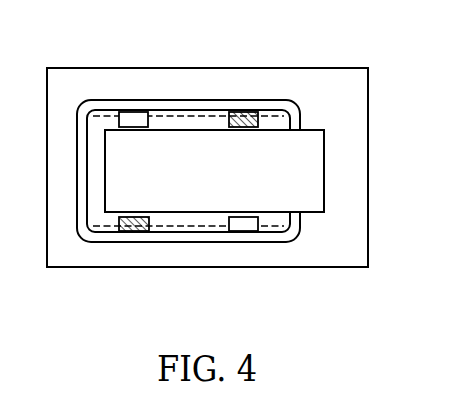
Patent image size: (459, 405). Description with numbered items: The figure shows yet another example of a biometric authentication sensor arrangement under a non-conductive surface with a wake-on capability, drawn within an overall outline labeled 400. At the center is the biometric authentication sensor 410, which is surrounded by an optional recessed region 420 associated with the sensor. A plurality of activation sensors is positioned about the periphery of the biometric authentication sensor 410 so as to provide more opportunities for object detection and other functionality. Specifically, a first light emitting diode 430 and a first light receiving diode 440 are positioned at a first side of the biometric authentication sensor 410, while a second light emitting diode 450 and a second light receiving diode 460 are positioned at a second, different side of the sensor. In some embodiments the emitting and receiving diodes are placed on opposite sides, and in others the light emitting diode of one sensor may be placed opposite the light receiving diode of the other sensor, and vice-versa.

The semiconductor package 400 is at (339, 320).
The biometric authentication sensor 410 is at (219, 143).
The recessed region 420 is at (168, 114).
The first light emitting diode 430 is at (136, 243).
The first light receiving diode 440 is at (243, 243).
The second light emitting diode 450 is at (253, 100).
The second light receiving diode 460 is at (120, 100).